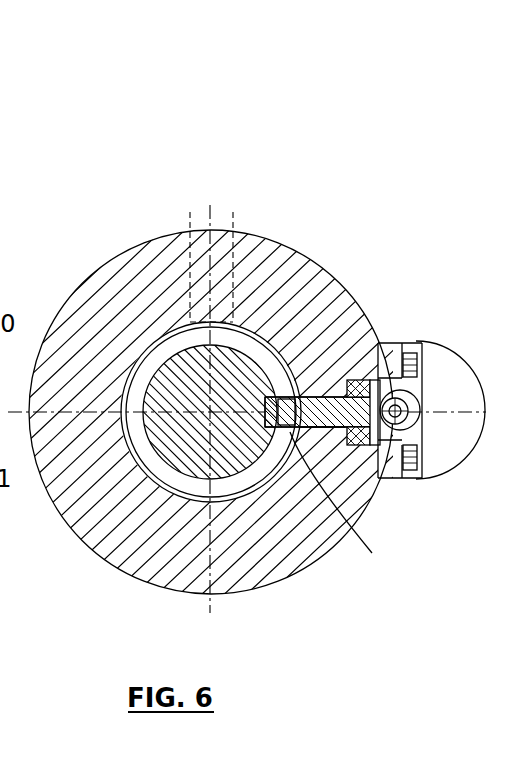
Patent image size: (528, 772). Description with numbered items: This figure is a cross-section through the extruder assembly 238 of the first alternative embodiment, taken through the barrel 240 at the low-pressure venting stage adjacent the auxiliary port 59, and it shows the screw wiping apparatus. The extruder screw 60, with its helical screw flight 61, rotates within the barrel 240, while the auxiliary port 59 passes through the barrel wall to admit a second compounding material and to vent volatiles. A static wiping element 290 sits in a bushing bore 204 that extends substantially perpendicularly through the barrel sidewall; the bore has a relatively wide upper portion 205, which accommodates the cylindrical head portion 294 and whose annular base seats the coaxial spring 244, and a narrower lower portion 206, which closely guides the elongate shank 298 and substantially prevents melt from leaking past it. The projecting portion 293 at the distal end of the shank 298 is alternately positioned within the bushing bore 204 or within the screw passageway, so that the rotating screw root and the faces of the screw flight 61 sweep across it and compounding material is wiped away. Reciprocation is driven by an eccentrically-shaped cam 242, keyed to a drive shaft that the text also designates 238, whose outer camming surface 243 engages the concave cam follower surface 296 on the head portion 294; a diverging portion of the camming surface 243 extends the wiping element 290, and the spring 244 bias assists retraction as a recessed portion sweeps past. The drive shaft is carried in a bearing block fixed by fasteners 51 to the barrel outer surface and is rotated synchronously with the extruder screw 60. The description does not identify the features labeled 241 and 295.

The extruder assembly 238 is at (207, 152).
The auxiliary port 59 is at (208, 249).
The barrel 240 is at (262, 322).
The extruder screw 60 is at (238, 358).
The static wiping element 290 is at (375, 380).
The projecting portion 293 is at (298, 395).
The upper portion of bushing bore 205 is at (326, 379).
The fasteners 51 is at (418, 347).
The upper insert 241 is at (444, 357).
The eccentrically-shaped cam 242 is at (462, 360).
The outer camming surface 243 is at (430, 430).
The cam follower surface 296 is at (425, 452).
The head portion 294 is at (412, 457).
The coaxial spring 244 is at (382, 455).
The shank 298 is at (380, 432).
The bushing bore 204 is at (320, 430).
The lower portion of bushing bore 206 is at (350, 445).
The screw flight 61 is at (226, 492).
The hatched housing body 295 is at (187, 497).